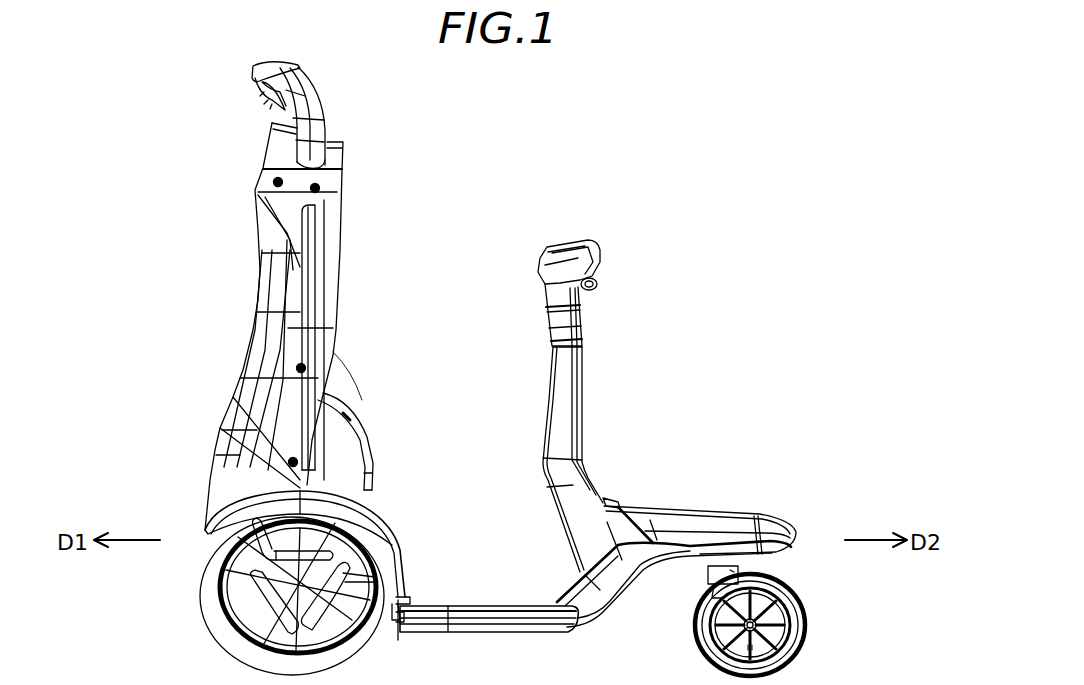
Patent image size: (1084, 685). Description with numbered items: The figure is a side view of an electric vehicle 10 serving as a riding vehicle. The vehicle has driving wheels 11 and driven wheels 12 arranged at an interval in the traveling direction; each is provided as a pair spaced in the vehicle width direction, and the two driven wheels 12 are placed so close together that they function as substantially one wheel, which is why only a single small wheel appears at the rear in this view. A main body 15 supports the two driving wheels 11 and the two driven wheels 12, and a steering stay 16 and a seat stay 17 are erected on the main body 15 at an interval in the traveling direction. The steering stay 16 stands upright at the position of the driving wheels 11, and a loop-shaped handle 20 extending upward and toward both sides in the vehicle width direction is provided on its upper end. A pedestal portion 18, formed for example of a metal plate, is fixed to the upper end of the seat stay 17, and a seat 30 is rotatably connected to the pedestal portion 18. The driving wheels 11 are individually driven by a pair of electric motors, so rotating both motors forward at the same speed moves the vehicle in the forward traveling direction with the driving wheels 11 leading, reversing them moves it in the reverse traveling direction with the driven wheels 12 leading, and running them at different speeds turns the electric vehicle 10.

The electric vehicle 10 is at (482, 177).
The driving wheels 11 is at (214, 632).
The driven wheels 12 is at (803, 616).
The main body 15 is at (479, 606).
The steering stay 16 is at (266, 345).
The seat stay 17 is at (590, 418).
The pedestal portion 18 is at (594, 318).
The handle 20 is at (300, 77).
The seat 30 is at (564, 244).